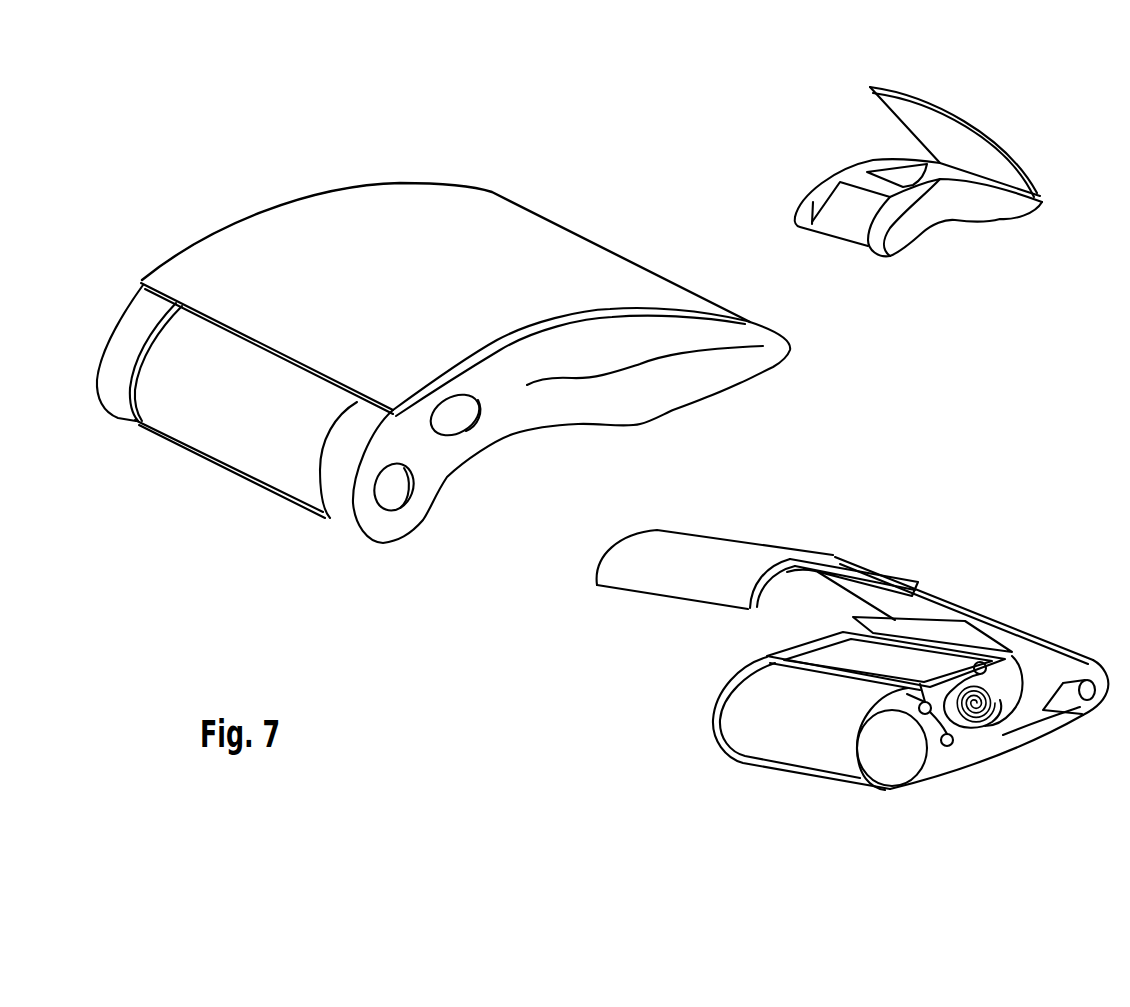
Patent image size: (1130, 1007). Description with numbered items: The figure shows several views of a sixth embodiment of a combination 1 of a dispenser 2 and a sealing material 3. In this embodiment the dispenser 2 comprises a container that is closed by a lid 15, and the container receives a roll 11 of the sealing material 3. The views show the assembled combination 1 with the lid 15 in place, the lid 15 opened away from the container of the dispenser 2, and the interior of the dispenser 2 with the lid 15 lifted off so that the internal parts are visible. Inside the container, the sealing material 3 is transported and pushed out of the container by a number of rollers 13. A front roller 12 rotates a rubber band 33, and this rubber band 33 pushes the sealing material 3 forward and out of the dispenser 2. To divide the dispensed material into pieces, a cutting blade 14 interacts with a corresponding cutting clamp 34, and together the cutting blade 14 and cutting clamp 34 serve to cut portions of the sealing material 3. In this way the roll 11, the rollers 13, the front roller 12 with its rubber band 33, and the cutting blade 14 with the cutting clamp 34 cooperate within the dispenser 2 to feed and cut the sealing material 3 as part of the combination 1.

The combination 1 is at (539, 166).
The dispenser 2 is at (697, 293).
The sealing material 3 is at (938, 618).
The roll 11 is at (990, 720).
The front roller 12 is at (897, 786).
The rollers 13 is at (980, 674).
The cutting blade 14 is at (850, 580).
The lid 15 is at (350, 200).
The rubber band 33 is at (797, 763).
The cutting clamp 34 is at (907, 694).